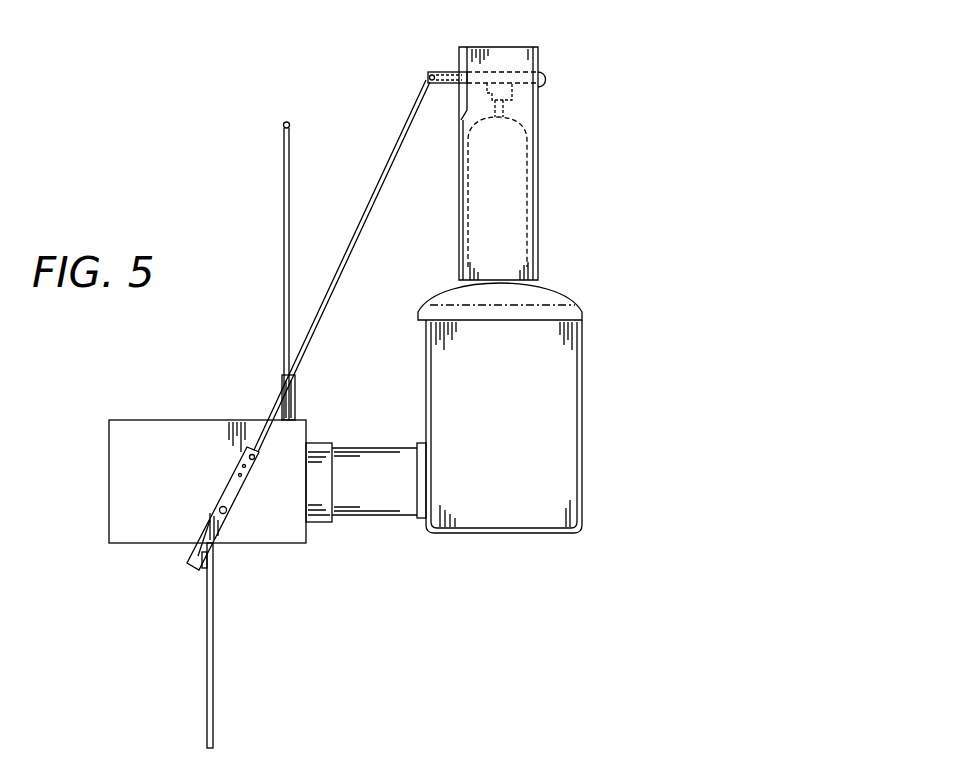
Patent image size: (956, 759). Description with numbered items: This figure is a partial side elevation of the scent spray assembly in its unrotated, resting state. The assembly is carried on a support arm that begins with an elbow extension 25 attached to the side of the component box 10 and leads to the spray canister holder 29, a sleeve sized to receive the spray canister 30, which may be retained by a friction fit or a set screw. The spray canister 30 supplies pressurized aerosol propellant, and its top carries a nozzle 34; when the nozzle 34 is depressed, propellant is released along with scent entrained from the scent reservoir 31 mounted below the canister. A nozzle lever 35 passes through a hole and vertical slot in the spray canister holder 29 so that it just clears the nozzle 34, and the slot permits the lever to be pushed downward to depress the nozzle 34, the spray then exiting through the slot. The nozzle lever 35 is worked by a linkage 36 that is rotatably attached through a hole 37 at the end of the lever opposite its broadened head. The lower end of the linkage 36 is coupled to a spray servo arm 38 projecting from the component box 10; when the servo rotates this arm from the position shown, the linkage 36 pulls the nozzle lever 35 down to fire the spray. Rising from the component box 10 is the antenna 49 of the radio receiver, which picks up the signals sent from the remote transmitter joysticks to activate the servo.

The component box 10 is at (130, 420).
The elbow extension 25 is at (378, 515).
The spray canister holder 29 is at (538, 195).
The spray canister 30 is at (523, 225).
The scent reservoir 31 is at (582, 402).
The nozzle 34 is at (512, 98).
The nozzle lever 35 is at (515, 70).
The linkage 36 is at (385, 167).
The hole 37 is at (433, 72).
The spray servo arm 38 is at (240, 490).
The antenna 49 is at (283, 177).